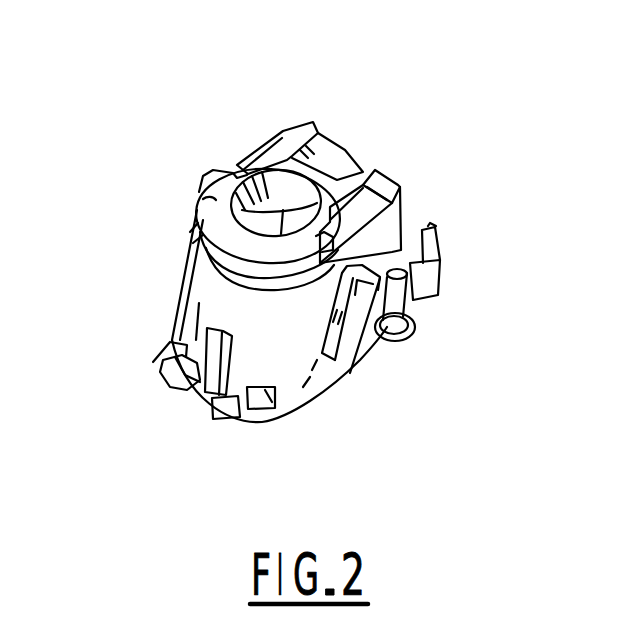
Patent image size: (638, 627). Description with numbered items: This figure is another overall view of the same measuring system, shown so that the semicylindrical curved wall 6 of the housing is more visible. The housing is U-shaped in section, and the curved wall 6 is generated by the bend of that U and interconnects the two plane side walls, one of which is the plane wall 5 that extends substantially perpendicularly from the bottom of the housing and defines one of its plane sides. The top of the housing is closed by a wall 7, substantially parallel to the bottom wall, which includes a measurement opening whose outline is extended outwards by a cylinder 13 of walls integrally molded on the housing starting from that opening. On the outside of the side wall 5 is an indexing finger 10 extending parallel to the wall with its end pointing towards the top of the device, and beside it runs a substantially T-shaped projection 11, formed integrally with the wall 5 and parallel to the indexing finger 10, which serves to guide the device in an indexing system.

The plane wall 5 is at (396, 250).
The semicylindrical curved wall 6 is at (171, 343).
The top wall 7 is at (332, 174).
The indexing finger 10 is at (413, 304).
The projection 11 is at (362, 337).
The cylinder 13 is at (213, 198).